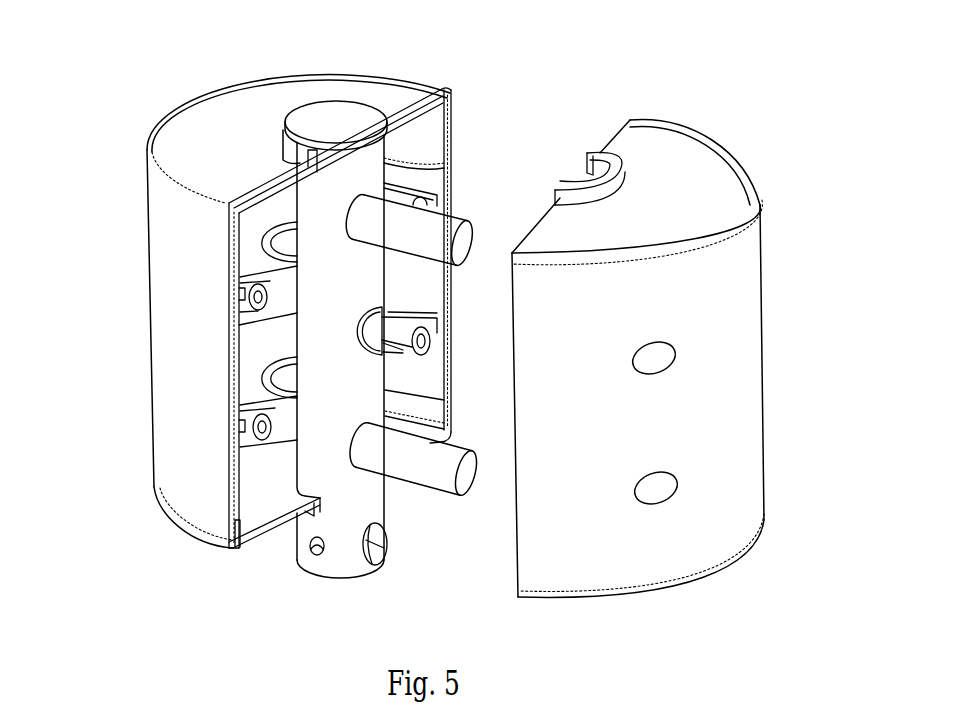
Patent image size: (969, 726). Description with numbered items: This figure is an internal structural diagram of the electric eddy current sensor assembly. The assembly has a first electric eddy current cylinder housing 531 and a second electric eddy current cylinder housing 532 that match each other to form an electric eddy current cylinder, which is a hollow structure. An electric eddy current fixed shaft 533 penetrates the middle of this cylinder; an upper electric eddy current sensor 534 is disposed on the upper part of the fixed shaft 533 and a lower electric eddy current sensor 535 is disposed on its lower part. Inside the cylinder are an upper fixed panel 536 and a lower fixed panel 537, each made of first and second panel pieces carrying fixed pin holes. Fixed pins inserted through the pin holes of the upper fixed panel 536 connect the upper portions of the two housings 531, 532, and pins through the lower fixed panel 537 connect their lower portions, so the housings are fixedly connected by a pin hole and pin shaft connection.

The first electric eddy current cylinder housing 531 is at (712, 318).
The second electric eddy current cylinder housing 532 is at (216, 132).
The electric eddy current fixed shaft 533 is at (322, 250).
The upper electric eddy current sensor 534 is at (435, 230).
The lower electric eddy current sensor 535 is at (465, 478).
The upper fixed panel 536 is at (410, 168).
The lower fixed panel 537 is at (257, 362).